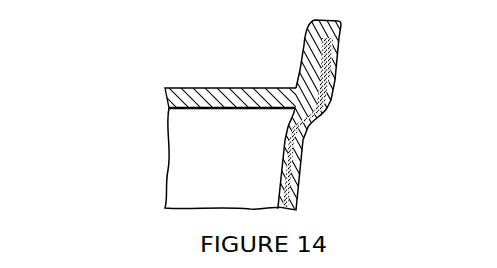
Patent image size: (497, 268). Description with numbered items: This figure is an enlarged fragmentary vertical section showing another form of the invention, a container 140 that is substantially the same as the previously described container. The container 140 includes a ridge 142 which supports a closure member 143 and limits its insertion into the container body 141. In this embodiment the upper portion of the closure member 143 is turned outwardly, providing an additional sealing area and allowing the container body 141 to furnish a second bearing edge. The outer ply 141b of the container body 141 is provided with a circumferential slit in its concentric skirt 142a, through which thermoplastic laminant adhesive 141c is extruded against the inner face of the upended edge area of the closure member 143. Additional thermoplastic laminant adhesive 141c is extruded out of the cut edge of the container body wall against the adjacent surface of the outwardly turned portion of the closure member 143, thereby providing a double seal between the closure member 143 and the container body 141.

The container 140 is at (158, 80).
The container body 141 is at (305, 150).
The outer ply 141b is at (316, 50).
The thermoplastic laminant adhesive 141c is at (337, 46).
The ridge 142 is at (289, 113).
The concentric skirt 142a is at (331, 56).
The closure member 143 is at (238, 60).